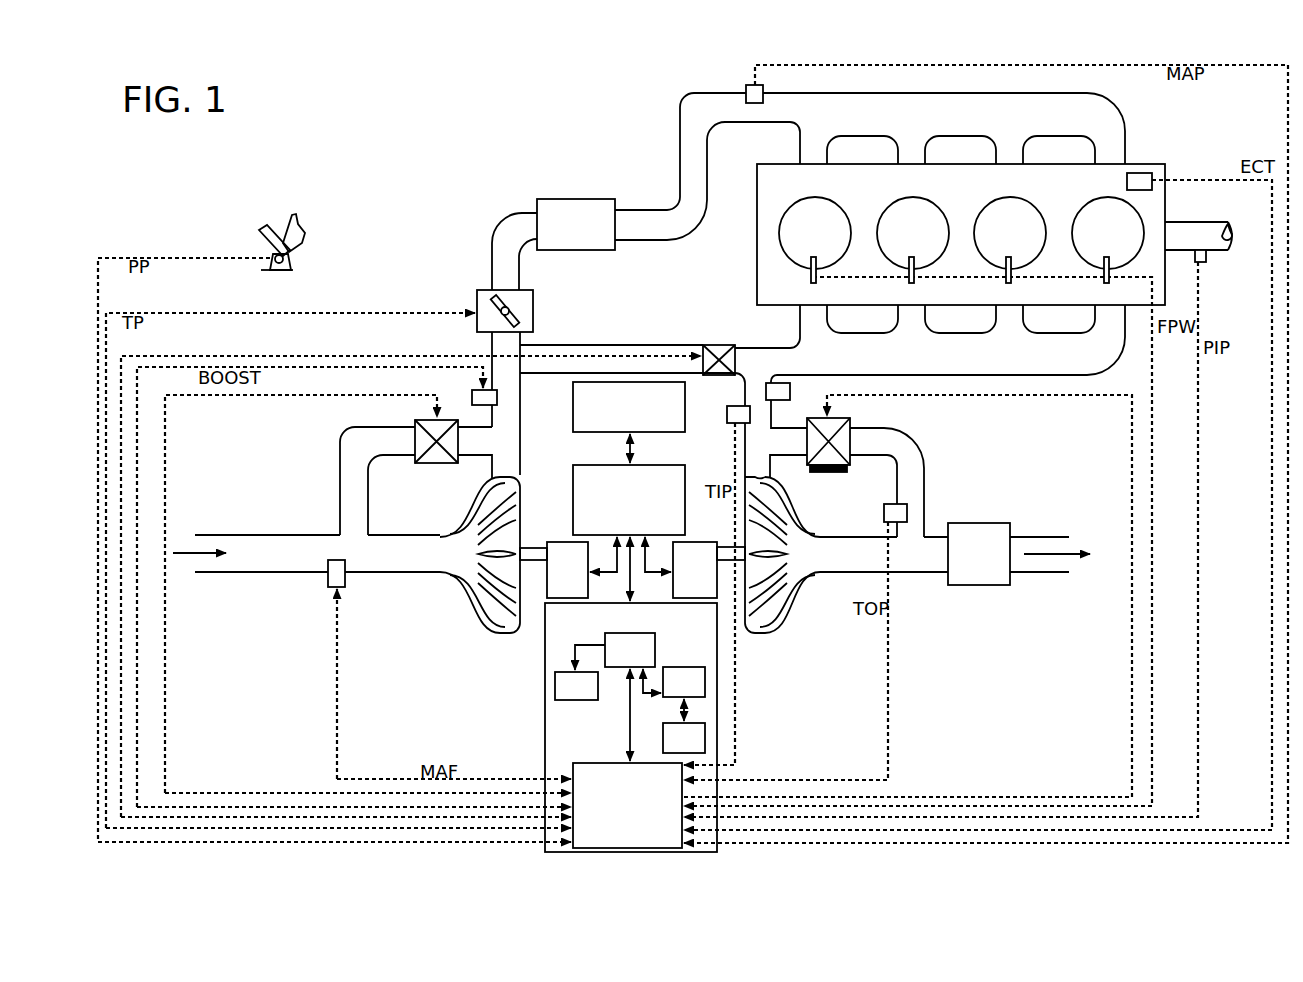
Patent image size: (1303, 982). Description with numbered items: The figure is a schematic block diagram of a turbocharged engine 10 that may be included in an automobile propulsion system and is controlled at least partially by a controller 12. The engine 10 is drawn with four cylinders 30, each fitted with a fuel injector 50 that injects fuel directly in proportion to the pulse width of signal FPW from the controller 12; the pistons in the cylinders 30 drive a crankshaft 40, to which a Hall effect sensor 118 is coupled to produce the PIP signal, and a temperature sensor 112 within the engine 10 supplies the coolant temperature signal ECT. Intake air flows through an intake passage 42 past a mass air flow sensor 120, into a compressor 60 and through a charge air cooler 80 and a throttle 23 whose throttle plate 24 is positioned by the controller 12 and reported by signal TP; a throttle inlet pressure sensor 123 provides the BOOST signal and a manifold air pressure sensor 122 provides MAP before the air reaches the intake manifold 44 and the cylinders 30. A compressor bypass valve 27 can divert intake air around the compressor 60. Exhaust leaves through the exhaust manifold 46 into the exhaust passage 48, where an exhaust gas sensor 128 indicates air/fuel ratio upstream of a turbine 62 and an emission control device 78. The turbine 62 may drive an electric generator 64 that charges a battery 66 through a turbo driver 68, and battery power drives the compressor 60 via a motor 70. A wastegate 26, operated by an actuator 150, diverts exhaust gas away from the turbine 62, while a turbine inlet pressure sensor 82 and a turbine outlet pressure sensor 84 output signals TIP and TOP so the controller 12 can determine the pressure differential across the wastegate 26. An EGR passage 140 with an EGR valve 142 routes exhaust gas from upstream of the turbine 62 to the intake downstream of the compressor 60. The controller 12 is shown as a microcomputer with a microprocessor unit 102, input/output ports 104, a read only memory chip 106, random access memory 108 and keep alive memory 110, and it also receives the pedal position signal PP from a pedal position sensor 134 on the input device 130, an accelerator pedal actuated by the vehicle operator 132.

The engine 10 is at (1061, 188).
The controller 12 is at (592, 738).
The throttle 23 is at (484, 290).
The throttle plate 24 is at (518, 323).
The wastegate 26 is at (850, 426).
The compressor bypass valve 27 is at (415, 426).
The cylinders 30 is at (825, 242).
The crankshaft 40 is at (1203, 222).
The intake passage 42 is at (256, 565).
The intake manifold 44 is at (847, 123).
The exhaust manifold 46 is at (821, 365).
The exhaust passage 48 is at (877, 563).
The fuel injectors 50 is at (811, 277).
The compressor 60 is at (472, 597).
The turbine 62 is at (783, 513).
The electric generator 64 is at (705, 580).
The battery 66 is at (573, 416).
The turbo driver 68 is at (660, 465).
The motor 70 is at (577, 580).
The emission control device 78 is at (989, 563).
The charge air cooler 80 is at (547, 199).
The turbine inlet pressure sensor 82 is at (727, 415).
The turbine outlet pressure sensor 84 is at (884, 517).
The microprocessor unit 102 is at (603, 644).
The input/output ports 104 is at (671, 837).
The read only memory chip 106 is at (555, 688).
The random access memory 108 is at (668, 667).
The keep alive memory 110 is at (663, 737).
The temperature sensor 112 is at (1143, 172).
The Hall effect sensor 118 is at (1206, 259).
The mass air flow sensor 120 is at (345, 579).
The manifold air pressure sensor 122 is at (746, 92).
The throttle inlet pressure sensor 123 is at (472, 395).
The exhaust gas sensor 128 is at (790, 392).
The input device 130 is at (262, 244).
The vehicle operator 132 is at (300, 229).
The pedal position sensor 134 is at (291, 260).
The EGR passage 140 is at (612, 345).
The EGR valve 142 is at (718, 345).
The actuator 150 is at (838, 472).